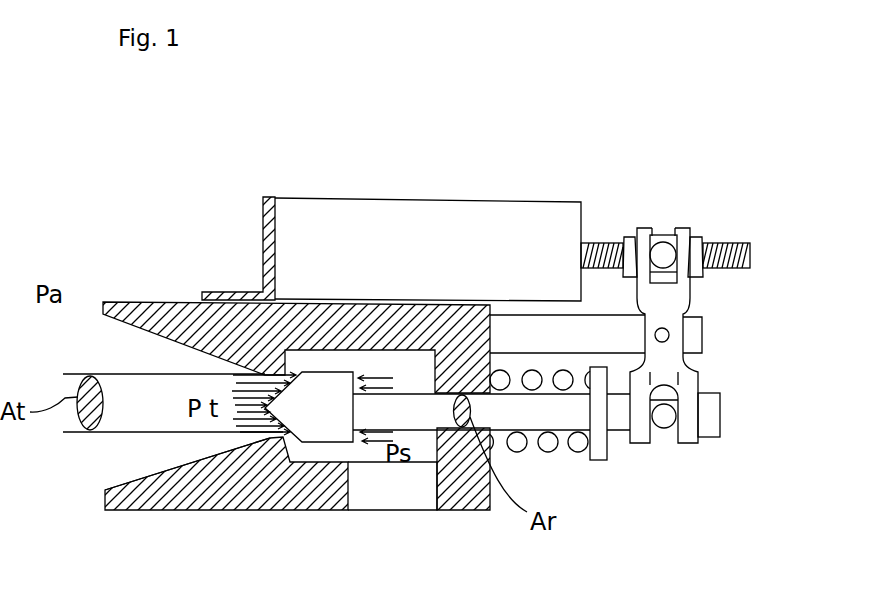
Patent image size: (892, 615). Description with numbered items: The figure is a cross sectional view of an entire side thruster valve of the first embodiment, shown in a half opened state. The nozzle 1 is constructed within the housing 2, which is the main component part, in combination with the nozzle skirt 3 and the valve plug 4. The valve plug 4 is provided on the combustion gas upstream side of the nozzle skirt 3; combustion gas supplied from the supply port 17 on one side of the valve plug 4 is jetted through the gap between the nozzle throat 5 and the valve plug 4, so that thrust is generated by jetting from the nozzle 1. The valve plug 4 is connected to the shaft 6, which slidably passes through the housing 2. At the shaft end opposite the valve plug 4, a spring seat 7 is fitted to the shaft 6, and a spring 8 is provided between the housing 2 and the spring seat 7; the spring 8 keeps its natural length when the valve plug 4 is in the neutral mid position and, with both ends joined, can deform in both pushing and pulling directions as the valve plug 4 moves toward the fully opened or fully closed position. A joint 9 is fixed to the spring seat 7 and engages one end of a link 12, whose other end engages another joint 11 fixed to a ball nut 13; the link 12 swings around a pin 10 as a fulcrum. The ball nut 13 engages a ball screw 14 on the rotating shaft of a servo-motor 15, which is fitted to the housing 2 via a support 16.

The nozzle 1 is at (127, 452).
The housing 2 is at (323, 493).
The nozzle skirt 3 is at (147, 492).
The valve plug 4 is at (317, 423).
The nozzle throat 5 is at (213, 497).
The shaft 6 is at (428, 420).
The spring seat 7 is at (600, 415).
The spring 8 is at (547, 452).
The joint 9 is at (660, 437).
The pin 10 is at (682, 357).
The joint 11 is at (660, 250).
The link 12 is at (667, 292).
The ball nut 13 is at (630, 235).
The ball screw 14 is at (600, 243).
The servo-motor 15 is at (457, 237).
The support 16 is at (262, 258).
The supply port 17 is at (395, 493).